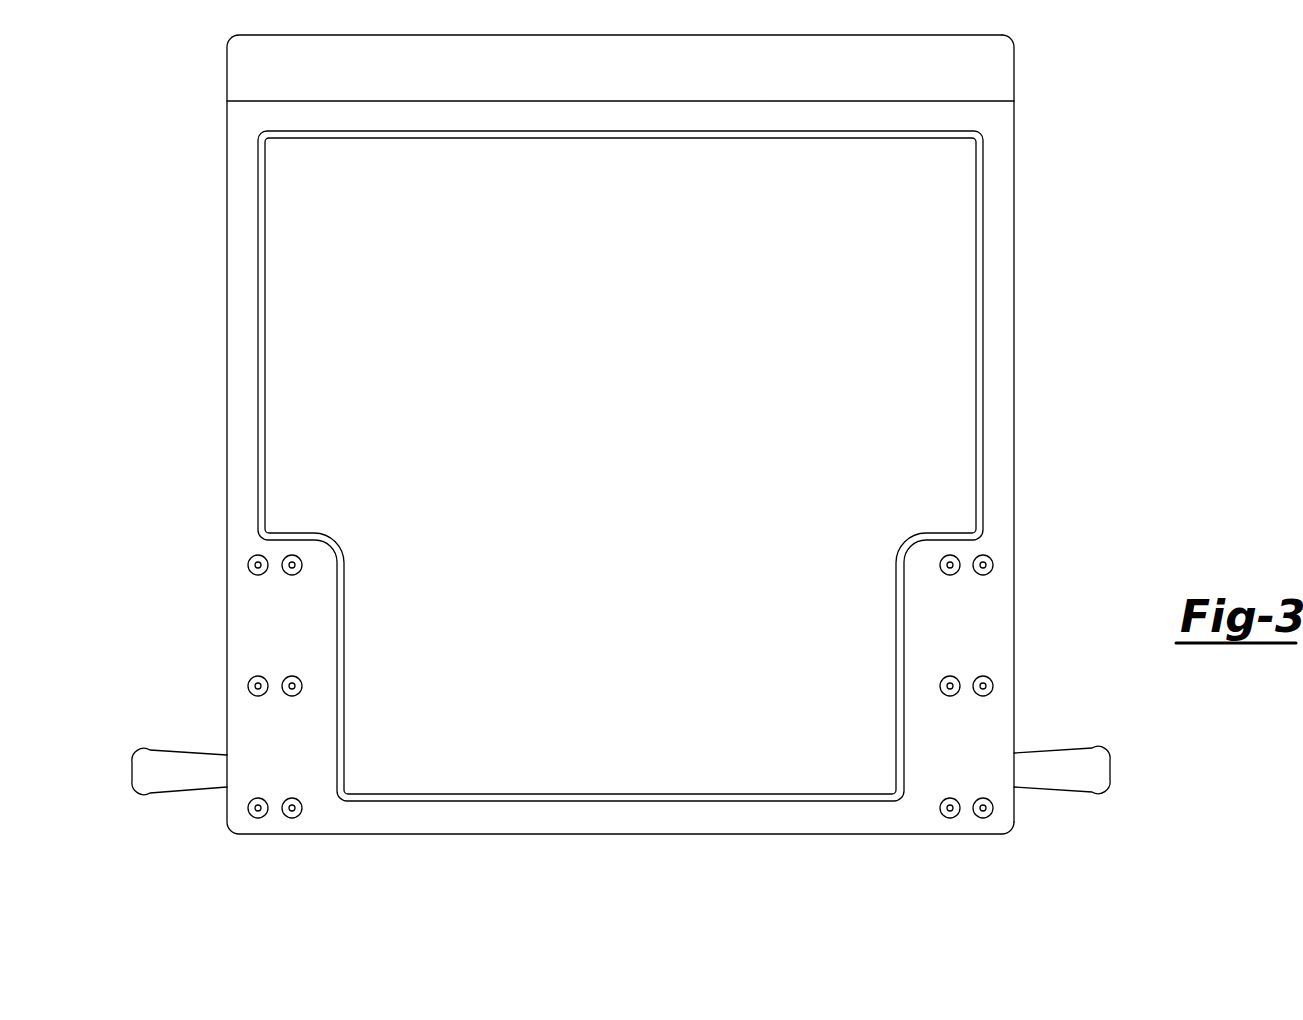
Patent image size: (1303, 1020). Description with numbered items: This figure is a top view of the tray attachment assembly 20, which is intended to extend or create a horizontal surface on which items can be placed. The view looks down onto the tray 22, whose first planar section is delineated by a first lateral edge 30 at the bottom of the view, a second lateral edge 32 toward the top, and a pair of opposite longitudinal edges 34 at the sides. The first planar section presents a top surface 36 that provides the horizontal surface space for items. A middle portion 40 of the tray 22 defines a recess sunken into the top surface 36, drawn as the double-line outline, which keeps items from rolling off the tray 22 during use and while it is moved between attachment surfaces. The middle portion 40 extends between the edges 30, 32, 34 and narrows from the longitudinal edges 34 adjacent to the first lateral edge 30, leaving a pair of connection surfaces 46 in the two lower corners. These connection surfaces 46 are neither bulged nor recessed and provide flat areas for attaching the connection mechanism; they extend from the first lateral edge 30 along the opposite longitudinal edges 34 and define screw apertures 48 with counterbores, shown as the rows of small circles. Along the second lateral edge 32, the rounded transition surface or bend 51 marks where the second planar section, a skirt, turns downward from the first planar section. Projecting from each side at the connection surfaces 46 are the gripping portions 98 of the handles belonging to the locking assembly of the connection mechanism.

The tray attachment assembly 20 is at (104, 240).
The tray 22 is at (508, 284).
The first lateral edge 30 is at (553, 822).
The second lateral edge 32 is at (1003, 108).
The longitudinal edges 34 is at (1014, 392).
The top surface 36 is at (1000, 288).
The middle portion 40 is at (623, 410).
The connection surfaces 46 is at (295, 655).
The screw apertures 48 is at (292, 575).
The bend 51 is at (995, 75).
The gripping portion 98 is at (157, 760).